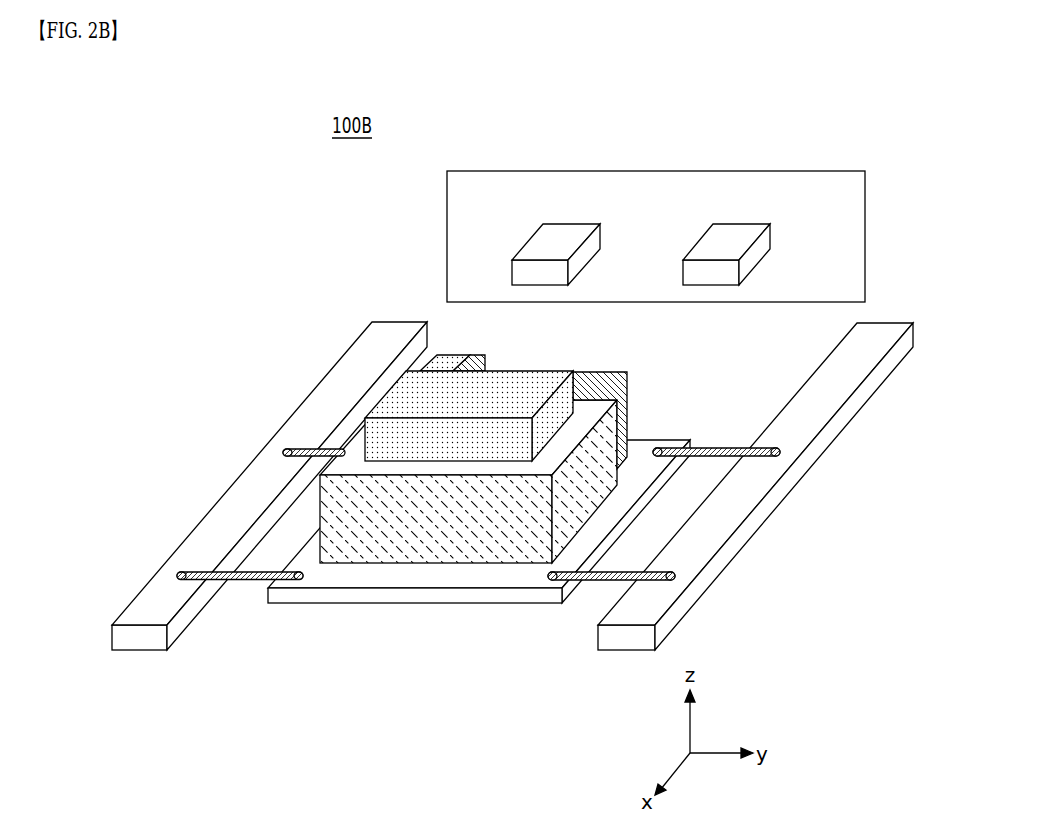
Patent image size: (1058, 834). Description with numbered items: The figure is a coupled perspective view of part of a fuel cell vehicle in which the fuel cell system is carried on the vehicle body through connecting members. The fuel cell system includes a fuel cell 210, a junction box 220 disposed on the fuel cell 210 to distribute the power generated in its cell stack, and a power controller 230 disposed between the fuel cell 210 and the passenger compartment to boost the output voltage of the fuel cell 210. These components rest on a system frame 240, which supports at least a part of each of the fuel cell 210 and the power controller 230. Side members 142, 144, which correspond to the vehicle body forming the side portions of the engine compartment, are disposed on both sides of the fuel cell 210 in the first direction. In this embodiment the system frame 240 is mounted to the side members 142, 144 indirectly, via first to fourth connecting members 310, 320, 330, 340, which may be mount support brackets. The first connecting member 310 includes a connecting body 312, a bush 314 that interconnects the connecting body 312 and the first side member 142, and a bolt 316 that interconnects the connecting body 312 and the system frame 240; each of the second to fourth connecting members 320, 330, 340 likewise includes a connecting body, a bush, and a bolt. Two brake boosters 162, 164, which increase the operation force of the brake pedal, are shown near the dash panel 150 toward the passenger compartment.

The first side member 142 is at (373, 337).
The side member 144 is at (627, 645).
The dash panel 150 is at (652, 183).
The brake booster 162 is at (566, 238).
The brake booster 164 is at (735, 238).
The fuel cell 210 is at (415, 548).
The junction box 220 is at (532, 374).
The power controller 230 is at (601, 376).
The system frame 240 is at (473, 597).
The first connecting member 310 is at (240, 651).
The connecting body 312 is at (240, 580).
The bush 314 is at (181, 579).
The bolt 316 is at (300, 580).
The second connecting member 320 is at (312, 447).
The third connecting member 330 is at (605, 580).
The fourth connecting member 340 is at (717, 447).